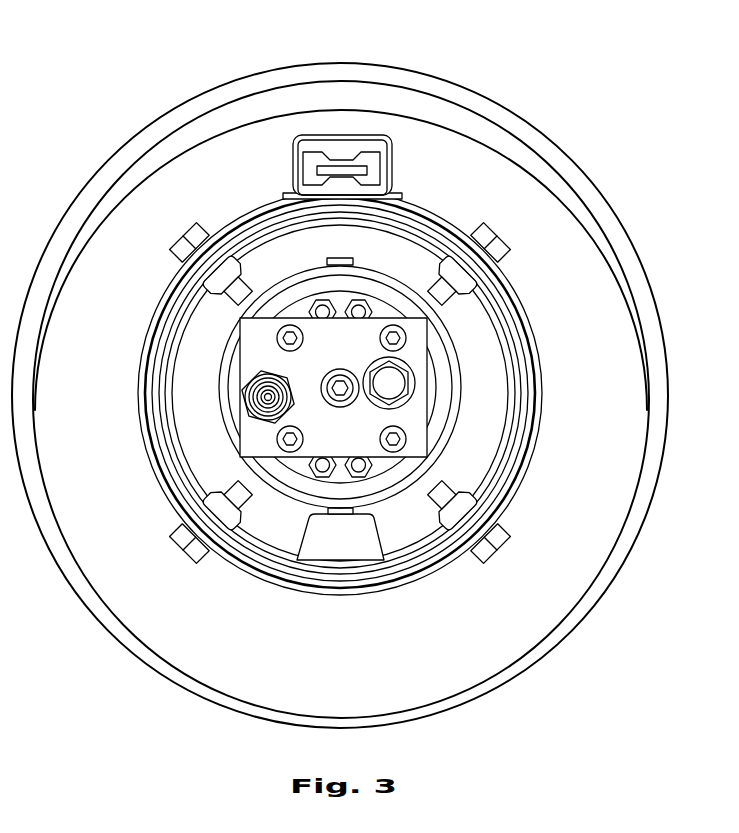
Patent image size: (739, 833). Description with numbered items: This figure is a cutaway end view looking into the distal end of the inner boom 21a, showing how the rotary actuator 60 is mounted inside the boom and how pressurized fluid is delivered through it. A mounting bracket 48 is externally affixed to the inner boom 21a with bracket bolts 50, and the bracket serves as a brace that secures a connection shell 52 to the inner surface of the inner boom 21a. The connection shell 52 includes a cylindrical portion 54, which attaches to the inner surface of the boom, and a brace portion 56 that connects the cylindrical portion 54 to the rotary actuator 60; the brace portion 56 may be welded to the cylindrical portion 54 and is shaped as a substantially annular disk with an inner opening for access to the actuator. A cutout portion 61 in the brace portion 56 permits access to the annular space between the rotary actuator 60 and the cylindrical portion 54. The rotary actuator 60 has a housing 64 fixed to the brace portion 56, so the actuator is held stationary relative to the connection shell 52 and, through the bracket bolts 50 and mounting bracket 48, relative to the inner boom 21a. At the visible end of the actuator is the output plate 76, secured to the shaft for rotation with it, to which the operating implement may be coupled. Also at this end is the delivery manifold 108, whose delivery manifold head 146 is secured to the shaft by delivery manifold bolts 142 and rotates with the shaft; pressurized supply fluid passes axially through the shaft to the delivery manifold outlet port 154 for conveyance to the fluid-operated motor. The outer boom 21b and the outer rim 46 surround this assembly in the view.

The inner boom 21a is at (173, 298).
The outer wall of ring housing 21b is at (418, 105).
The outer rim 46 is at (579, 279).
The mounting bracket 48 is at (256, 208).
The bracket bolts 50 is at (183, 236).
The connection shell 52 is at (160, 385).
The cylindrical portion 54 is at (511, 300).
The brace portion 56 is at (400, 250).
The rotary actuator 60 is at (407, 369).
The cutout portion 61 is at (380, 539).
The housing 64 is at (446, 324).
The output plate 76 is at (345, 298).
The delivery manifold 108 is at (245, 395).
The delivery manifold bolts 142 is at (290, 326).
The delivery manifold head 146 is at (243, 348).
The delivery manifold outlet port 154 is at (340, 385).